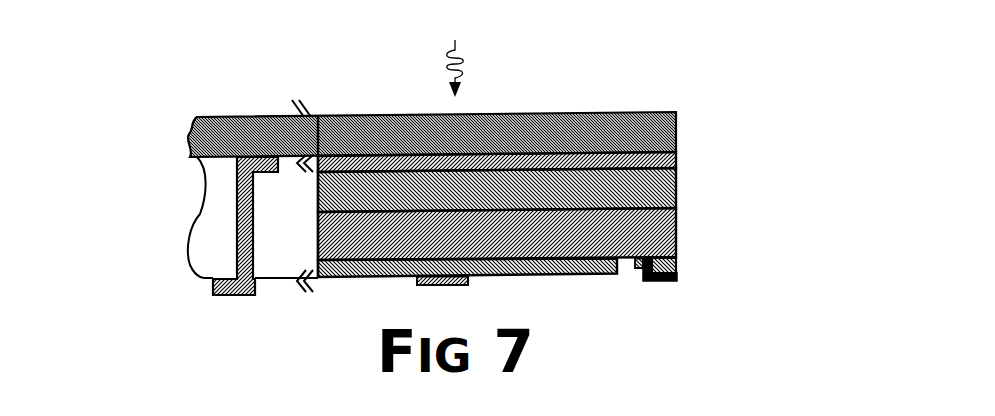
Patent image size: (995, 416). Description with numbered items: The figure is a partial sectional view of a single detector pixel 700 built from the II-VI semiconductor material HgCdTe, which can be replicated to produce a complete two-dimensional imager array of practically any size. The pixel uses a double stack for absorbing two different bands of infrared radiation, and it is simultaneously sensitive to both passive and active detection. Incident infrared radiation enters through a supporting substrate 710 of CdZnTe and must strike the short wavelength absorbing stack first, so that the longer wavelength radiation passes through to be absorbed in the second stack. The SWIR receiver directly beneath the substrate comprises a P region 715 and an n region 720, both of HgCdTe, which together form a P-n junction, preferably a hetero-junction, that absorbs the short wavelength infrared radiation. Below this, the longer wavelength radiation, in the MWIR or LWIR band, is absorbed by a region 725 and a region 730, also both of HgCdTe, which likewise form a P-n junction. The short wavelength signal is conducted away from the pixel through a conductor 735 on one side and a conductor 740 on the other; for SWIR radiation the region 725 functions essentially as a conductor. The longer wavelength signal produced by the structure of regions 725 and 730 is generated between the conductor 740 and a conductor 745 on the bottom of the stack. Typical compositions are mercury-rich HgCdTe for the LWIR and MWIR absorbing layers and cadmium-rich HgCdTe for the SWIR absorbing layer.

The pixel 700 is at (261, 47).
The supporting substrate 710 is at (495, 112).
The P region 715 is at (675, 157).
The n region 720 is at (677, 187).
The region 725 is at (677, 232).
The region 730 is at (678, 265).
The conductor 735 is at (213, 297).
The conductor 740 is at (640, 281).
The conductor 745 is at (472, 284).